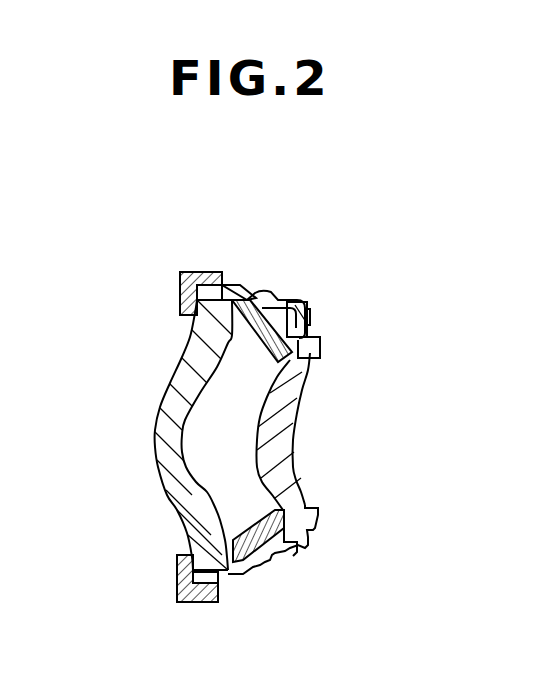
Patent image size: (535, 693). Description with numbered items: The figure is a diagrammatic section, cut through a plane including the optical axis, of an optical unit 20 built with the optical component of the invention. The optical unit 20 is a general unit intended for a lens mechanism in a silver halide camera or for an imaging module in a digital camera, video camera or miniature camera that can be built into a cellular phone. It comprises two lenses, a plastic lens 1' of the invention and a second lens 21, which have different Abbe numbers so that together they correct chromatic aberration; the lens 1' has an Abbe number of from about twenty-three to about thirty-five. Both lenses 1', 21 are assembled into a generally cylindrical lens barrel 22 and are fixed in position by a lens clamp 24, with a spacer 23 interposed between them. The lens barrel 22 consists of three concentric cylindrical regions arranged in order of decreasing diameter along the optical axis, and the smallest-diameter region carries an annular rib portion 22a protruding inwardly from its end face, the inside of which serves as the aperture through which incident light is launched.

The optical unit 20 is at (285, 206).
The optical component in lens form 1' is at (155, 435).
The lens 21 is at (320, 352).
The lens barrel 22 is at (263, 298).
The annular rib portion 22a is at (317, 523).
The spacer 23 is at (287, 573).
The lens clamp 24 is at (196, 599).